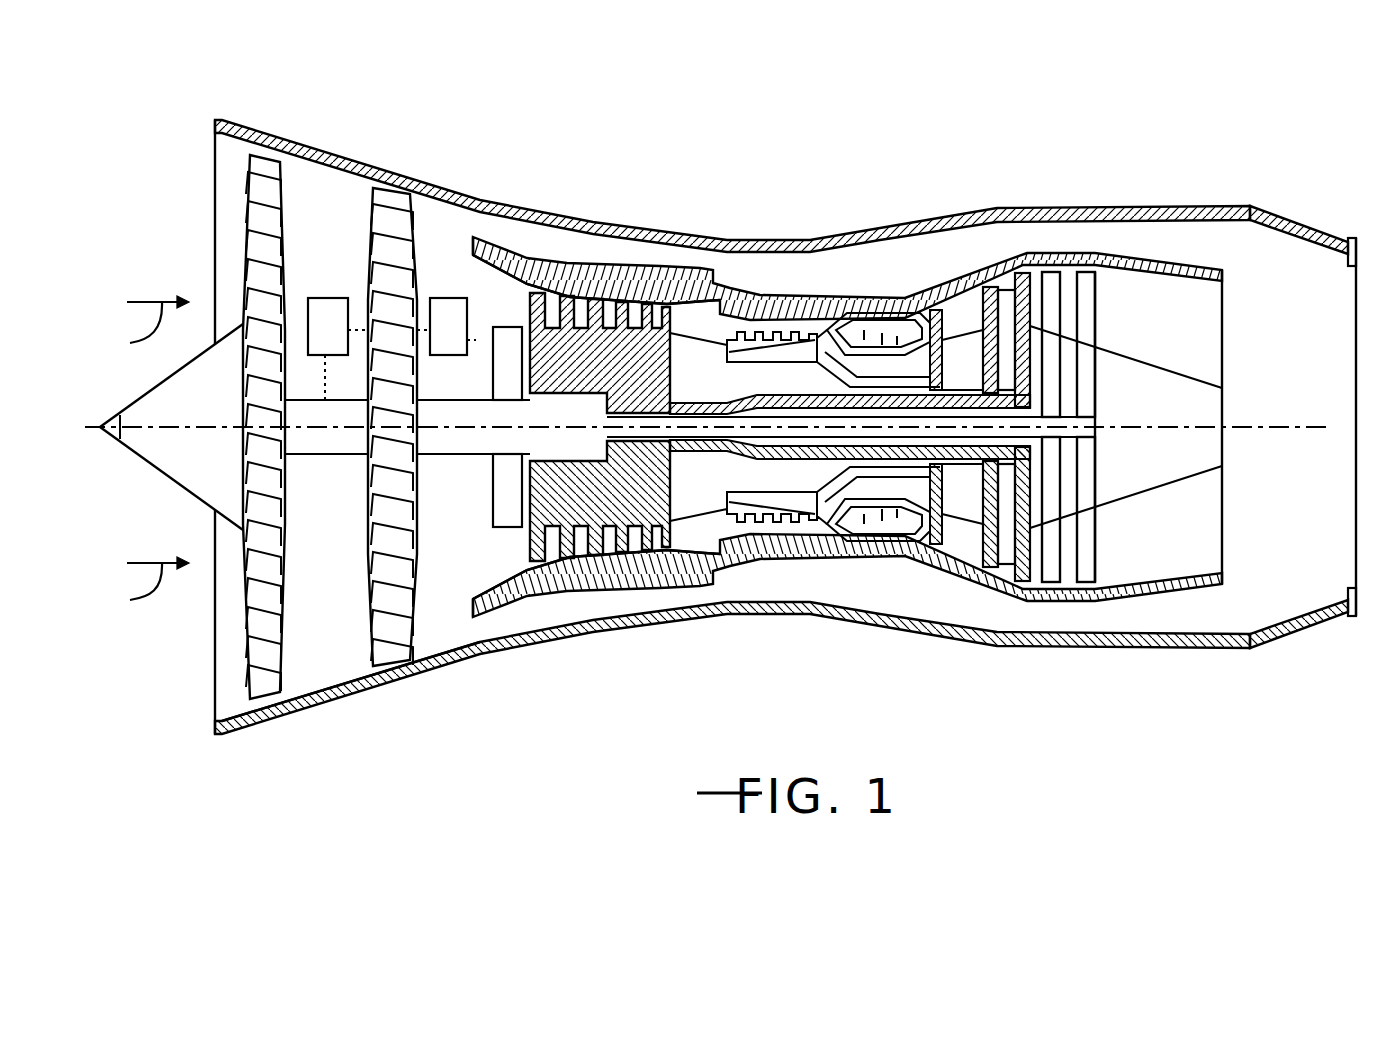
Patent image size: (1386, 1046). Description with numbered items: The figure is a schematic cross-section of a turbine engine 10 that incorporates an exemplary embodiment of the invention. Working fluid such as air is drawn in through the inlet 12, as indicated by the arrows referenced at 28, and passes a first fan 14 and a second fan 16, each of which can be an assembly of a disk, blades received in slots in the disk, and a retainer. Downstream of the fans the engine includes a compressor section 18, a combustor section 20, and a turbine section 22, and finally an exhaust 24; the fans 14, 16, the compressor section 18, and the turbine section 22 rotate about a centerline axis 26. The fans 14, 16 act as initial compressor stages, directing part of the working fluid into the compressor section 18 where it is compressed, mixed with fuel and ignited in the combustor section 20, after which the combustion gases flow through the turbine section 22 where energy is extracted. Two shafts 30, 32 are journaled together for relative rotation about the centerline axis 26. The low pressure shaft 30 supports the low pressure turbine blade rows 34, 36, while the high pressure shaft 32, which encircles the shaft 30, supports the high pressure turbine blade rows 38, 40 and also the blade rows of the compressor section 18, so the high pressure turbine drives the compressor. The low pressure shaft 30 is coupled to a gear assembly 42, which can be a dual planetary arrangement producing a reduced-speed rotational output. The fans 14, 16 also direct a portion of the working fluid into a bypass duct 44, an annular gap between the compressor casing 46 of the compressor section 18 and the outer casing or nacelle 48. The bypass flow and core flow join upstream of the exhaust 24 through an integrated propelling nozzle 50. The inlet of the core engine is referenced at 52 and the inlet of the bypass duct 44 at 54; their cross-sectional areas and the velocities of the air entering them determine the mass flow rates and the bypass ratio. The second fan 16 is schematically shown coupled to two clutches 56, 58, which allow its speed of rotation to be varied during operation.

The turbine engine 10 is at (740, 207).
The inlet 12 is at (315, 414).
The first fan 14 is at (253, 241).
The second fan 16 is at (397, 190).
The compressor section 18 is at (660, 511).
The combustor section 20 is at (875, 543).
The turbine section 22 is at (1066, 426).
The exhaust 24 is at (1357, 556).
The centerline axis 26 is at (1298, 426).
The arrows indicating working fluid 28 is at (141, 457).
The low pressure shaft 30 is at (970, 437).
The high pressure shaft 32 is at (782, 400).
The low pressure turbine blade row 34 is at (1053, 262).
The low pressure turbine blade row 36 is at (1088, 268).
The high pressure turbine blade row 38 is at (990, 287).
The high pressure turbine blade row 40 is at (1025, 272).
The gear assembly 42 is at (500, 530).
The bypass duct 44 is at (538, 238).
The compressor casing 46 is at (585, 268).
The nacelle 48 is at (492, 195).
The integrated propelling nozzle 50 is at (1300, 628).
The inlet of the core engine 52 is at (477, 630).
The inlet of the bypass duct 54 is at (475, 645).
The first clutch 56 is at (457, 300).
The second clutch 58 is at (340, 297).